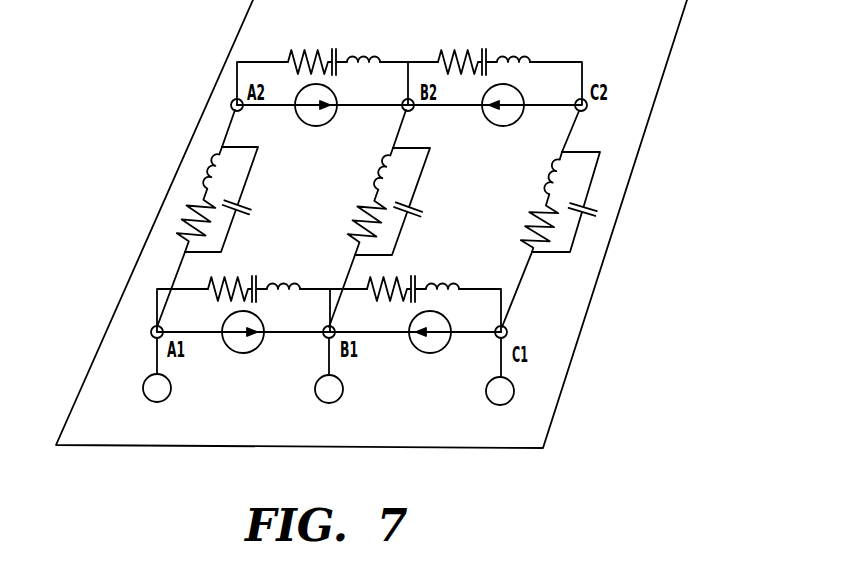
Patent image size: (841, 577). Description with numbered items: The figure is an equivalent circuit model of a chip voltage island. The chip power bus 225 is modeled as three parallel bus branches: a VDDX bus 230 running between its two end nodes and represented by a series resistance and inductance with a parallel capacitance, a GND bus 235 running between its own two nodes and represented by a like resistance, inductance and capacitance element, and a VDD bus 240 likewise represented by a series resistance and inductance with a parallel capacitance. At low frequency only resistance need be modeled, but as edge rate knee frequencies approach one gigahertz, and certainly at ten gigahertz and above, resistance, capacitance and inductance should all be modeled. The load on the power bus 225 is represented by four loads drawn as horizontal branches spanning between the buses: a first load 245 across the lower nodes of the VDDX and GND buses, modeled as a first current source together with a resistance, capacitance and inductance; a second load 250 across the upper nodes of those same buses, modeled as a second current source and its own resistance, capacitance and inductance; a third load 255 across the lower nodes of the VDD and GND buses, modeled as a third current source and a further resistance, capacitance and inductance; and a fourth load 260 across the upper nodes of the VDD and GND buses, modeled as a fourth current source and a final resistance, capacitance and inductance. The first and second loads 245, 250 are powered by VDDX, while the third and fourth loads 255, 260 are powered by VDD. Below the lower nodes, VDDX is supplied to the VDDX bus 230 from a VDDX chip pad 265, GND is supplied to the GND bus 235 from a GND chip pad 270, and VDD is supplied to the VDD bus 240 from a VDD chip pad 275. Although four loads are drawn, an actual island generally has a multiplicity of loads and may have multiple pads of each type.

The chip power bus 225 is at (615, 230).
The VDDX bus 230 is at (193, 110).
The GND bus 235 is at (386, 119).
The VDD bus 240 is at (551, 119).
The first load 245 is at (337, 265).
The second load 250 is at (407, 44).
The third load 255 is at (508, 265).
The fourth load 260 is at (576, 44).
The VDDX chip pad 265 is at (148, 398).
The GND chip pad 270 is at (320, 402).
The VDD chip pad 275 is at (493, 403).